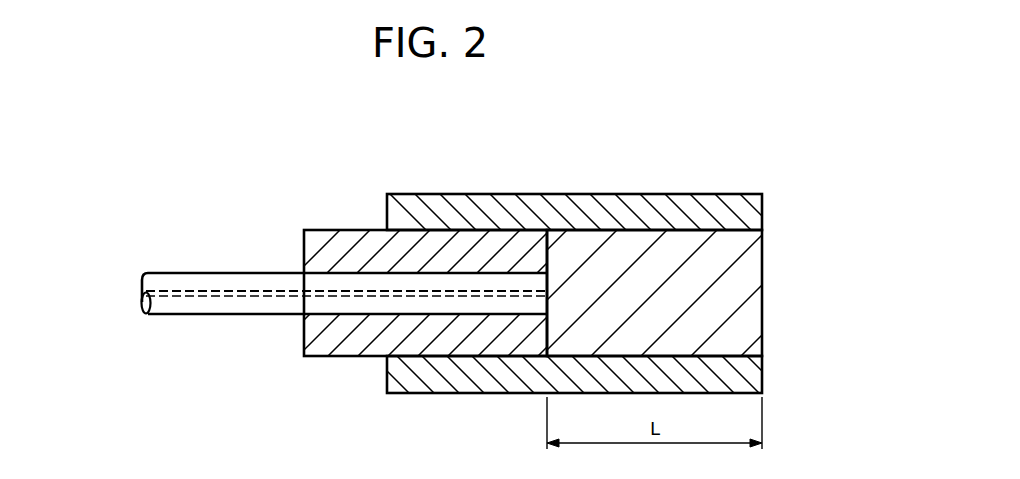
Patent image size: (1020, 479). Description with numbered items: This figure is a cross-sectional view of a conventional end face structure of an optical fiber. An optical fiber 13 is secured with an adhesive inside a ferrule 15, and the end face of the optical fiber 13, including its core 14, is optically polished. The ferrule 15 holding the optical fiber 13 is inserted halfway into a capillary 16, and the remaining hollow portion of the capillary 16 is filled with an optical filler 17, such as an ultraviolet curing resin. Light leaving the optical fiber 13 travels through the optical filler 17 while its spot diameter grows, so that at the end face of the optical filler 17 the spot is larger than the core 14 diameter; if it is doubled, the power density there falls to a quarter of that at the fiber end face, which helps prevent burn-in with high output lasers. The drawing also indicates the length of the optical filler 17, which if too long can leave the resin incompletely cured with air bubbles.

The optical fiber 13 is at (238, 297).
The core 14 is at (200, 272).
The ferrule 15 is at (343, 243).
The capillary 16 is at (543, 207).
The optical filler 17 is at (705, 240).